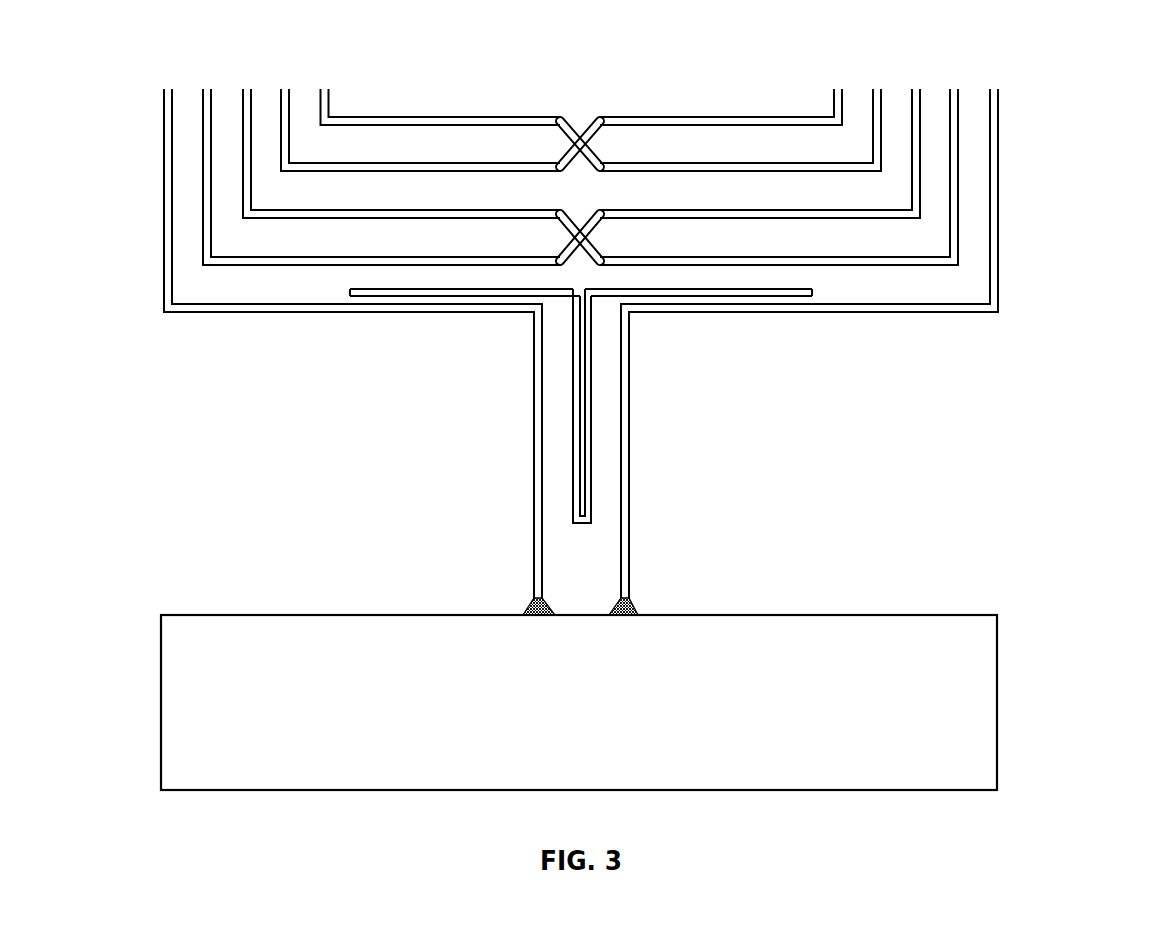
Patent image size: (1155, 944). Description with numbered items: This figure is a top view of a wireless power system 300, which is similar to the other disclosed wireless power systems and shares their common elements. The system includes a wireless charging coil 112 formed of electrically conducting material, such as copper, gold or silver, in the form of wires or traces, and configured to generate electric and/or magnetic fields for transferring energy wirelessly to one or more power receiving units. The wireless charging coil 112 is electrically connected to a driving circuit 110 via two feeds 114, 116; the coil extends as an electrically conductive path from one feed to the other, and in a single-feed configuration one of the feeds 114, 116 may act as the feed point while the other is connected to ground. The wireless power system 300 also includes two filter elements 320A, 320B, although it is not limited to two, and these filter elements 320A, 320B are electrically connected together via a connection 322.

The wireless power system 300 is at (1056, 110).
The wireless charging coil 112 is at (993, 277).
The filter element 320A is at (558, 400).
The filter element 320B is at (609, 380).
The connection 322 is at (563, 537).
The feed 114 is at (538, 632).
The feed 116 is at (624, 632).
The driving circuit 110 is at (997, 700).